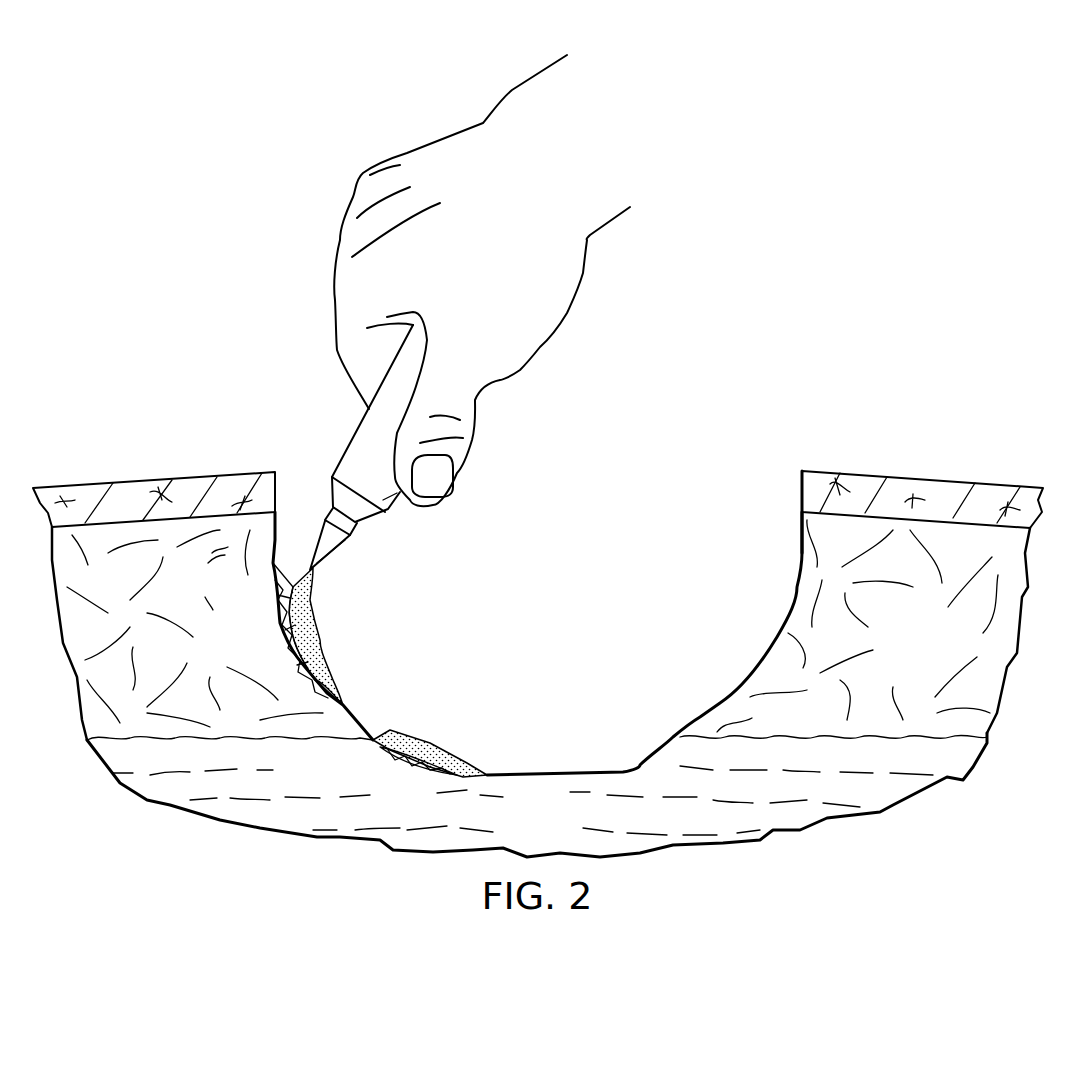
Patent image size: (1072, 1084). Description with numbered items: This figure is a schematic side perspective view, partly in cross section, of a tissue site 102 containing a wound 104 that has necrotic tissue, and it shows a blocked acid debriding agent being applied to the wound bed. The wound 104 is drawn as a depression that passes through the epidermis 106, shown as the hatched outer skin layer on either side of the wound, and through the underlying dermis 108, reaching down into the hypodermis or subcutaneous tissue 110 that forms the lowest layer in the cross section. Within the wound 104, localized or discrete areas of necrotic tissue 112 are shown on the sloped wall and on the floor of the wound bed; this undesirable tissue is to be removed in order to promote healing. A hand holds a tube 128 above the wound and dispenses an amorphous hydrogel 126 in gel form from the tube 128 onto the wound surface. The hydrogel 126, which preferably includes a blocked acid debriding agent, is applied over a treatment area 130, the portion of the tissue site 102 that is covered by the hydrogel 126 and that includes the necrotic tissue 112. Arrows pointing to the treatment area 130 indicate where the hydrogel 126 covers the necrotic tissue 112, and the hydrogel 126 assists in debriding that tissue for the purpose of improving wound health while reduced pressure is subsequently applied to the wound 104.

The tissue site 102 is at (745, 676).
The wound 104 is at (800, 557).
The epidermis 106 is at (997, 482).
The dermis 108 is at (896, 641).
The subcutaneous tissue 110 is at (516, 825).
The necrotic tissue 112 is at (280, 633).
The hydrogel 126 is at (320, 637).
The tube 128 is at (348, 443).
The treatment area 130 is at (260, 600).